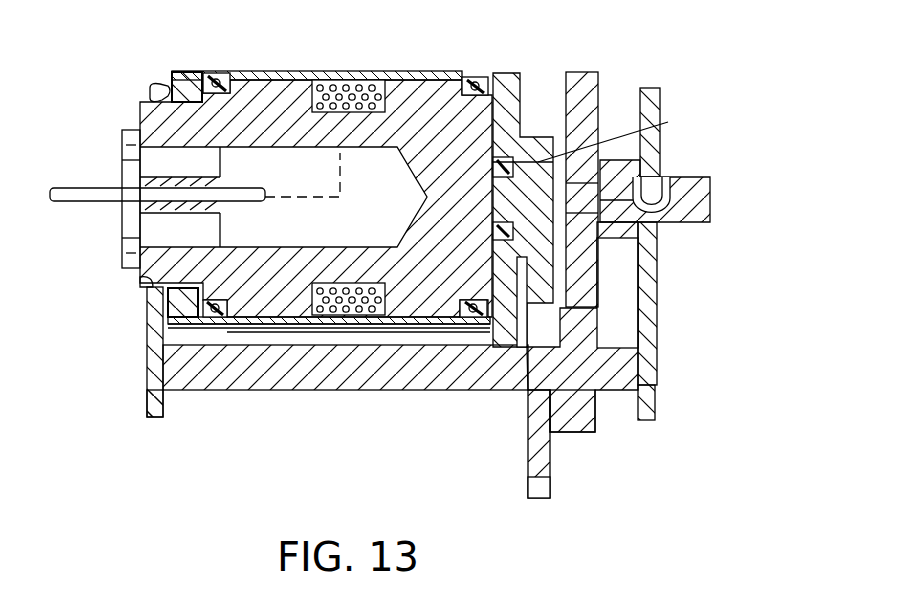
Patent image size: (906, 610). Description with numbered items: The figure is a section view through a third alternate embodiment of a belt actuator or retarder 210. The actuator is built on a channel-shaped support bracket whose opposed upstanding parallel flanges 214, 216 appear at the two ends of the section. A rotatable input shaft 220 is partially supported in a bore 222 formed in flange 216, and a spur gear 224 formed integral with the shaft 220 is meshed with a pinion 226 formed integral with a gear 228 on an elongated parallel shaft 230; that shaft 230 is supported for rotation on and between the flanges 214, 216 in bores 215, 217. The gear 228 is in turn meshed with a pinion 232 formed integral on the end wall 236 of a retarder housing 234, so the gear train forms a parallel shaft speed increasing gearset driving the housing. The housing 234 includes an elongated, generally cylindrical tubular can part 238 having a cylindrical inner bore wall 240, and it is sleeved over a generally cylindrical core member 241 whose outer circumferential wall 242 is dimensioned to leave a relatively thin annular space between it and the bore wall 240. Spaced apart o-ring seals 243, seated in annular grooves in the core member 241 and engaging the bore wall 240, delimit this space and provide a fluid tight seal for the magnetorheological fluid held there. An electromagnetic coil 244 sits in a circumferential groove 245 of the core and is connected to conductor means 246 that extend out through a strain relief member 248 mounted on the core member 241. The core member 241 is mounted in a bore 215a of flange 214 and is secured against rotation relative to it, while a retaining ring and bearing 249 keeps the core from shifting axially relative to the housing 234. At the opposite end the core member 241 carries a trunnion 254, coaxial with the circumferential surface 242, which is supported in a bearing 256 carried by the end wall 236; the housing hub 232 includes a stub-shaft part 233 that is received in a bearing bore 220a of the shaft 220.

The belt actuator or retarder 210 is at (676, 92).
The upstanding flange 214 is at (150, 320).
The bore 215 is at (147, 364).
The bore 215a is at (140, 283).
The upstanding flange 216 is at (660, 290).
The bore 217 is at (652, 358).
The rotatable input shaft 220 is at (712, 208).
The bearing bore 220a is at (662, 207).
The bore 222 is at (680, 178).
The spur gear 224 is at (585, 76).
The pinion 226 is at (576, 430).
The gear 228 is at (528, 487).
The elongated parallel shaft 230 is at (312, 394).
The pinion 232 is at (598, 118).
The stub-shaft part 233 is at (640, 226).
The retarder housing 234 is at (507, 310).
The end wall 236 is at (505, 268).
The tubular can part 238 is at (262, 70).
The inner bore wall 240 is at (240, 318).
The core member 241 is at (160, 118).
The outer circumferential wall 242 is at (400, 323).
The o-ring seals 243 is at (218, 78).
The electromagnetic coil 244 is at (348, 112).
The circumferential groove 245 is at (307, 320).
The conductor means 246 is at (241, 186).
The strain relief member 248 is at (122, 234).
The retaining ring and bearing 249 is at (172, 79).
The trunnion 254 is at (492, 228).
The bearing 256 is at (603, 134).